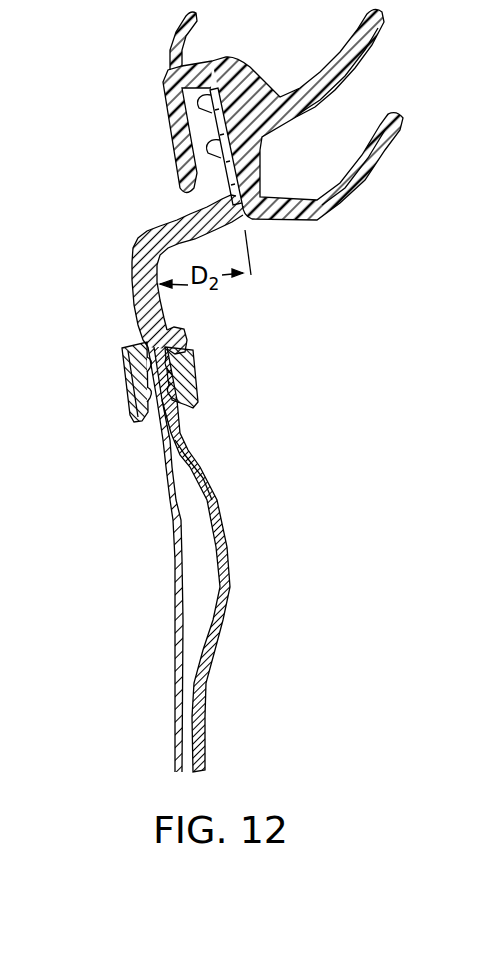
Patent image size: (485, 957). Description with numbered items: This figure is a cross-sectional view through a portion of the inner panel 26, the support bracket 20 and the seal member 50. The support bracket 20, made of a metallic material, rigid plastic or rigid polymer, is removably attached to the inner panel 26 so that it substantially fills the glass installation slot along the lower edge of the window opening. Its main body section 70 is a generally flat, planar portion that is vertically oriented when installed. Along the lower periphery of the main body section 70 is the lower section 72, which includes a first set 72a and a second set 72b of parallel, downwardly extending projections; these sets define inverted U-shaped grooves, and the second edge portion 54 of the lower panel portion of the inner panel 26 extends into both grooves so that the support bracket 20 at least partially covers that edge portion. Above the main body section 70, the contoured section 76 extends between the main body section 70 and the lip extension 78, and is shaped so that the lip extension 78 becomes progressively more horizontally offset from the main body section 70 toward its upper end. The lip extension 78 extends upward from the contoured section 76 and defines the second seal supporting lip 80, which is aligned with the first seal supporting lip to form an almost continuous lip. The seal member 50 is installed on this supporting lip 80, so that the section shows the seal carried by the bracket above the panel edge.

The support bracket 20 is at (236, 185).
The inner panel 26 is at (228, 552).
The seal member 50 is at (249, 108).
The second edge portion 54 is at (142, 340).
The main body section 70 is at (150, 316).
The lower section 72 is at (132, 382).
The first set of parallel projections 72a is at (125, 382).
The second set of parallel projections 72b is at (188, 351).
The contoured section 76 is at (160, 224).
The lip extension 78 is at (233, 157).
The second seal supporting lip 80 is at (183, 80).